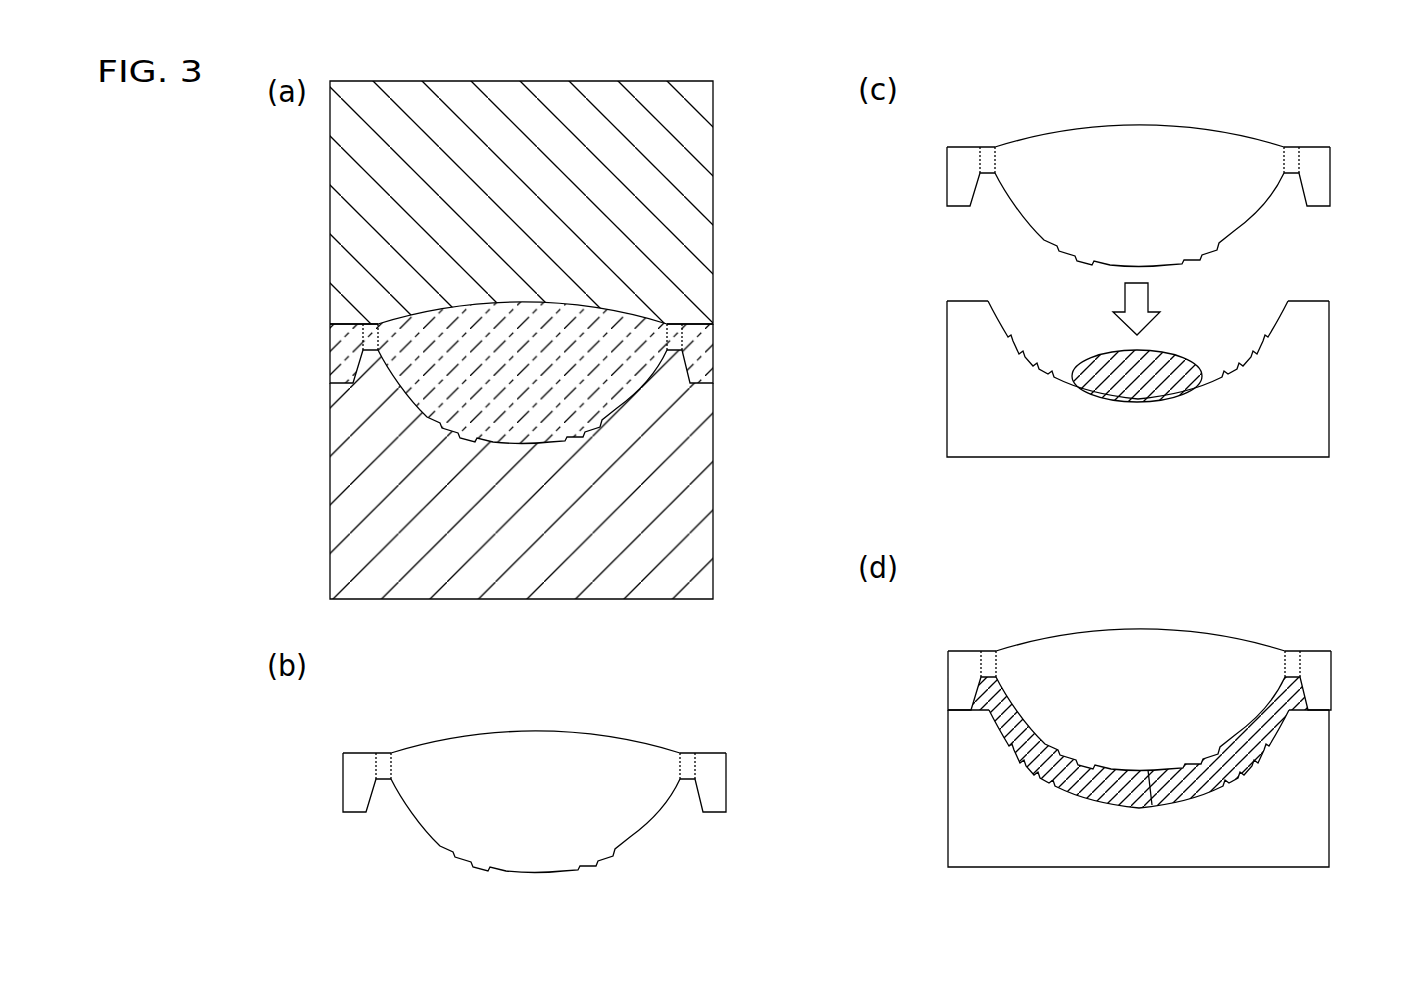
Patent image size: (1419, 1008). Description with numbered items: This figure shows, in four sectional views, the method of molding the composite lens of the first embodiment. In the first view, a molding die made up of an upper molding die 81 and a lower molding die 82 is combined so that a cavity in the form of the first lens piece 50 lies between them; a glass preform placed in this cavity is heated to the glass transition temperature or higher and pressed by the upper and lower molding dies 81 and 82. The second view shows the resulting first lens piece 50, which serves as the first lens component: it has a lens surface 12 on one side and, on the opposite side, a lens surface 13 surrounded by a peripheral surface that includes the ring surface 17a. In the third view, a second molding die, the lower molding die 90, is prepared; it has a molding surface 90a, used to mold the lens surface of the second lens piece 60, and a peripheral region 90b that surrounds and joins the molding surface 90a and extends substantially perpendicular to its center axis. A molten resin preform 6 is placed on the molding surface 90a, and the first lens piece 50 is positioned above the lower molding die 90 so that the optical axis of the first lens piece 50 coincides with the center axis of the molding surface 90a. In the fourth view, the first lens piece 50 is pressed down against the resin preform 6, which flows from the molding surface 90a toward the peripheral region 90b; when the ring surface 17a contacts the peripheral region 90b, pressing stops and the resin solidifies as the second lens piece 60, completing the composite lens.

The first lens piece 50 is at (870, 482).
The lens surface 12 is at (450, 735).
The lens surface 13 is at (423, 827).
The ring surface 17a is at (355, 813).
The upper molding die 81 is at (702, 149).
The lower molding die 82 is at (702, 541).
The lower molding die 90 is at (1136, 563).
The molding surface 90a is at (1060, 368).
The peripheral region 90b is at (963, 300).
The resin preform 6 is at (1152, 399).
The second lens piece 60 is at (1208, 780).